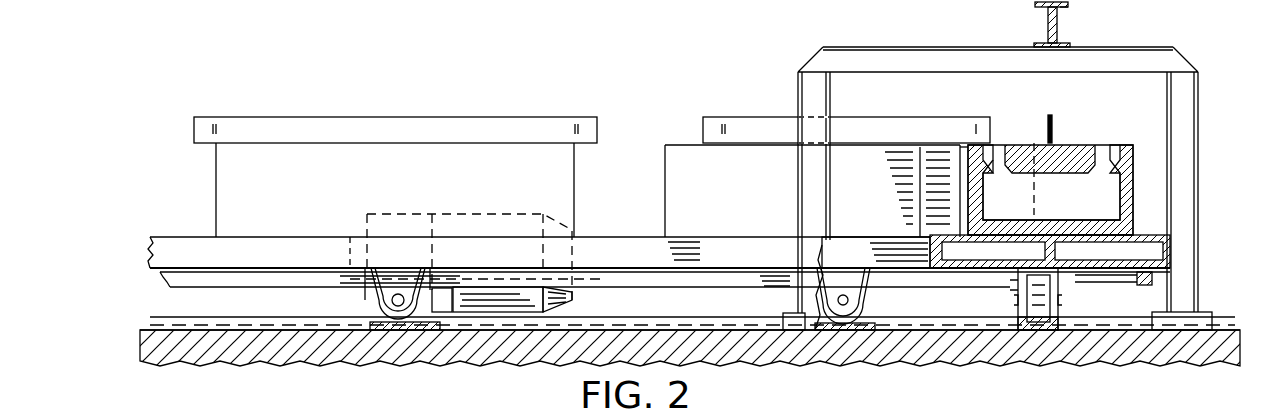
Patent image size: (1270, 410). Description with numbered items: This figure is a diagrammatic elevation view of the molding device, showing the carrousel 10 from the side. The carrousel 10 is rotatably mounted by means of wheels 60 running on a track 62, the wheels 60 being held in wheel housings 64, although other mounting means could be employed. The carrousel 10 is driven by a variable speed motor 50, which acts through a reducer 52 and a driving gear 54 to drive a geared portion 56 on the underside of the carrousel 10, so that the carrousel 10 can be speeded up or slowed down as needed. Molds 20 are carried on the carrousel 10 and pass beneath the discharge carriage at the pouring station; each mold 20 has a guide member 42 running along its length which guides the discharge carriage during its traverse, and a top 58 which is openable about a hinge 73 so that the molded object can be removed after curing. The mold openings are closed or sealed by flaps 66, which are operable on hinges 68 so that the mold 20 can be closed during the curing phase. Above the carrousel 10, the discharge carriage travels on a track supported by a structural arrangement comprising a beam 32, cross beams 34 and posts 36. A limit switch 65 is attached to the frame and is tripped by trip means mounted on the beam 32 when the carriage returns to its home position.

The carrousel 10 is at (1150, 235).
The mold 20 is at (214, 177).
The beam 32 is at (1040, 12).
The cross beams 34 is at (858, 47).
The posts 36 is at (798, 90).
The guide member 42 is at (222, 117).
The variable speed motor 50 is at (560, 300).
The reducer 52 is at (362, 291).
The driving gear 54 is at (350, 237).
The geared portion 56 is at (1152, 278).
The top 58 is at (1128, 120).
The wheels 60 is at (385, 305).
The track 62 is at (1045, 330).
The wheel housings 64 is at (372, 300).
The limit switch 65 is at (1068, 20).
The flaps 66 is at (1010, 140).
The hinges 68 is at (1042, 112).
The hinge 73 is at (967, 150).